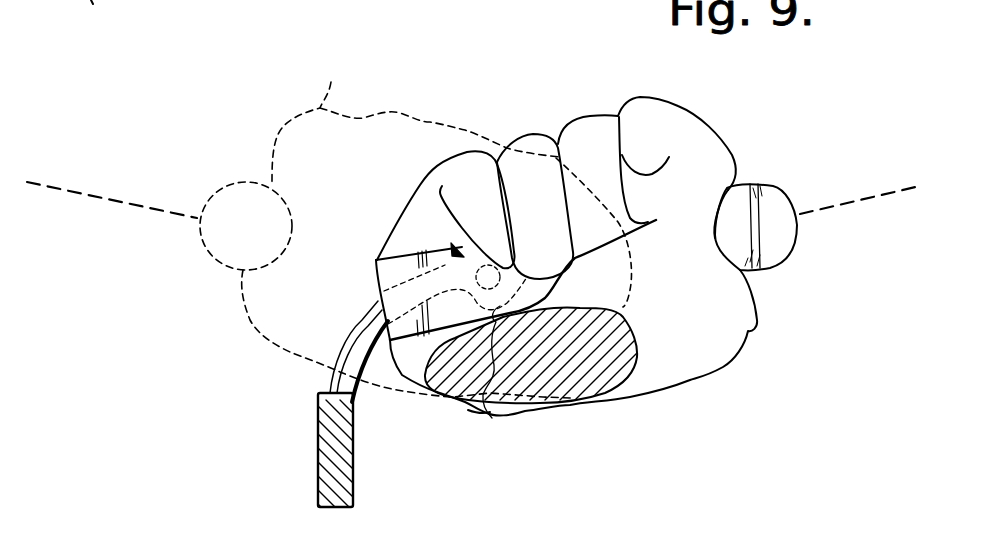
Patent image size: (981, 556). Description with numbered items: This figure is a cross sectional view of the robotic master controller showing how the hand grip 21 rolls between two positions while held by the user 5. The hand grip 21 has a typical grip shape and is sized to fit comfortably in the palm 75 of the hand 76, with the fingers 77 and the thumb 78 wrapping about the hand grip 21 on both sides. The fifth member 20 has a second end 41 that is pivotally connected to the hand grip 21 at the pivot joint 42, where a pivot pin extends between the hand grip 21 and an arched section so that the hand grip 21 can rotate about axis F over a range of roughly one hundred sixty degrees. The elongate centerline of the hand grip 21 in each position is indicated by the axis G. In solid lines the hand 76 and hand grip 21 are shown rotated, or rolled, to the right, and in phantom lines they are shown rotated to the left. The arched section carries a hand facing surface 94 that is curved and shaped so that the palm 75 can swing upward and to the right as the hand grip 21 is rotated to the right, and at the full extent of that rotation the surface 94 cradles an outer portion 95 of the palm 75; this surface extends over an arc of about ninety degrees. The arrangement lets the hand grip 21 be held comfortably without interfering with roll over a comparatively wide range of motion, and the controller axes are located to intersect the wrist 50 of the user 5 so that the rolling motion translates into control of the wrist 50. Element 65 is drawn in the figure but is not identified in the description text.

The user 5 is at (748, 330).
The fifth member 20 is at (318, 455).
The hand grip 21 is at (231, 182).
The second end 41 is at (440, 265).
The pivot joint 42 is at (455, 250).
The wrist 50 is at (645, 345).
The tube / conduit 65 is at (329, 342).
The palm 75 is at (487, 417).
The hand 76 is at (331, 84).
The fingers 77 is at (577, 125).
The thumb 78 is at (675, 107).
The hand facing surface 94 is at (383, 360).
The outer portion 95 is at (362, 328).
The axis G is at (127, 201).